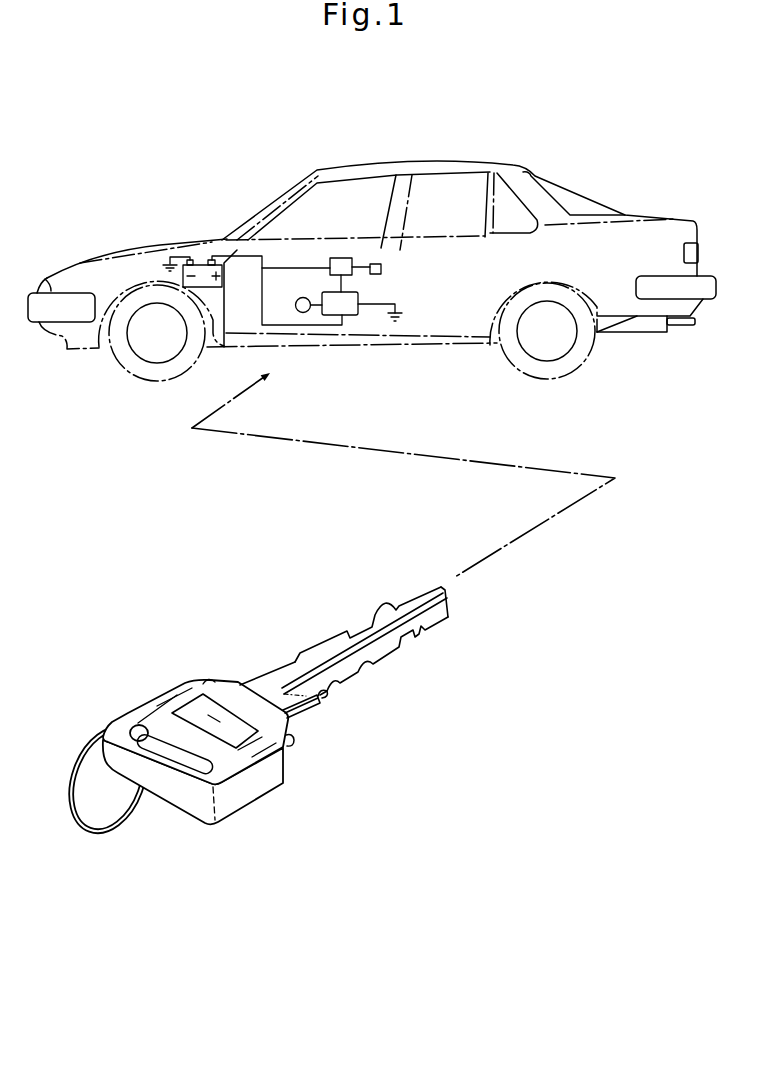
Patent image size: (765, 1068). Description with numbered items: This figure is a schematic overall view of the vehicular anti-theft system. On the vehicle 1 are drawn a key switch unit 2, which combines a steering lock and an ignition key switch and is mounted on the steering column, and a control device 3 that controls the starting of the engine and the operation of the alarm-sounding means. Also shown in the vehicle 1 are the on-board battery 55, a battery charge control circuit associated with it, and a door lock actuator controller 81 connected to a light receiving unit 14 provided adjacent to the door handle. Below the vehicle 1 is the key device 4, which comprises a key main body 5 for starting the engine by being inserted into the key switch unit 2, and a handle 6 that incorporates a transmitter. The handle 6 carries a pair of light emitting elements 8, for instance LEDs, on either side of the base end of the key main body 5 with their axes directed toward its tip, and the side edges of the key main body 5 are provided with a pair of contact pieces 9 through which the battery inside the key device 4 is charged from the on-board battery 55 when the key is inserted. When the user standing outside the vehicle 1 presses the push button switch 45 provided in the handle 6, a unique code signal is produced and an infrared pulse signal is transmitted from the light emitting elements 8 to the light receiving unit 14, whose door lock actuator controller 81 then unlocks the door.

The vehicle 1 is at (517, 153).
The key switch unit 2 is at (382, 270).
The control device 3 is at (333, 258).
The light receiving unit 14 is at (300, 313).
The on-board battery 55 is at (201, 263).
The door lock actuator controller 81 is at (356, 315).
The key device 4 is at (312, 600).
The key main body 5 is at (412, 592).
The handle 6 is at (224, 822).
The light emitting elements 8 is at (212, 681).
The contact pieces 9 is at (263, 674).
The push button switch 45 is at (197, 698).